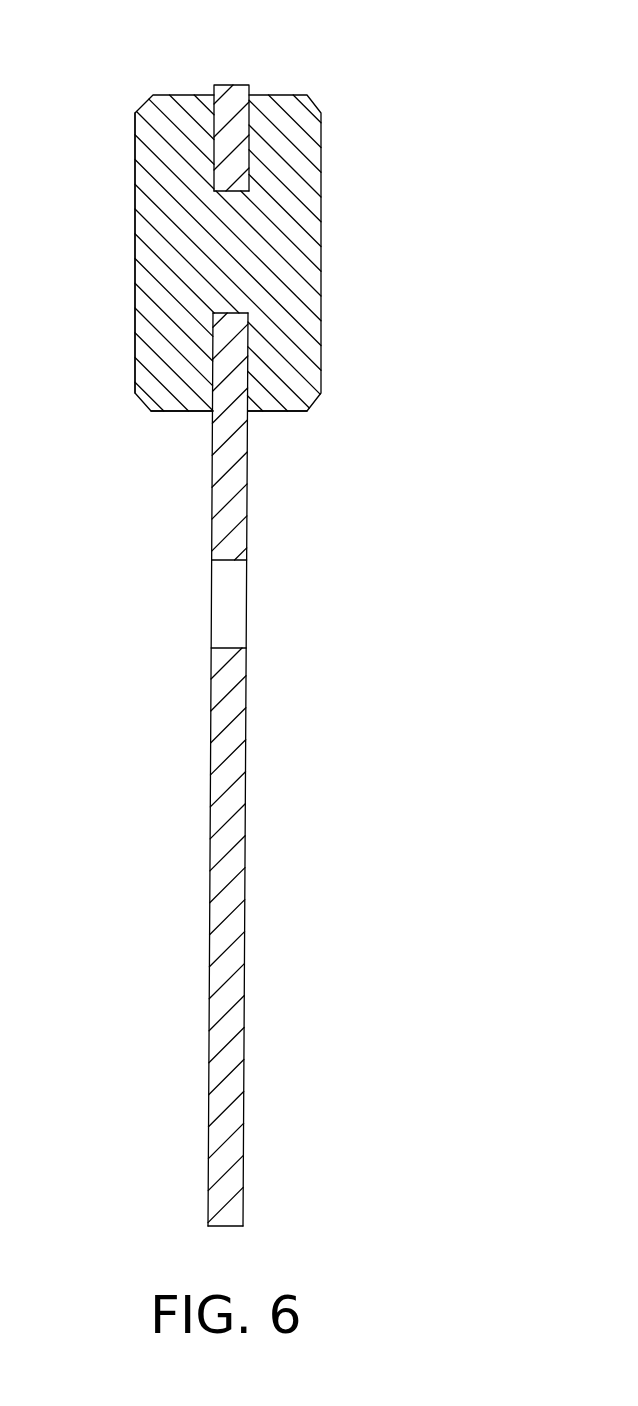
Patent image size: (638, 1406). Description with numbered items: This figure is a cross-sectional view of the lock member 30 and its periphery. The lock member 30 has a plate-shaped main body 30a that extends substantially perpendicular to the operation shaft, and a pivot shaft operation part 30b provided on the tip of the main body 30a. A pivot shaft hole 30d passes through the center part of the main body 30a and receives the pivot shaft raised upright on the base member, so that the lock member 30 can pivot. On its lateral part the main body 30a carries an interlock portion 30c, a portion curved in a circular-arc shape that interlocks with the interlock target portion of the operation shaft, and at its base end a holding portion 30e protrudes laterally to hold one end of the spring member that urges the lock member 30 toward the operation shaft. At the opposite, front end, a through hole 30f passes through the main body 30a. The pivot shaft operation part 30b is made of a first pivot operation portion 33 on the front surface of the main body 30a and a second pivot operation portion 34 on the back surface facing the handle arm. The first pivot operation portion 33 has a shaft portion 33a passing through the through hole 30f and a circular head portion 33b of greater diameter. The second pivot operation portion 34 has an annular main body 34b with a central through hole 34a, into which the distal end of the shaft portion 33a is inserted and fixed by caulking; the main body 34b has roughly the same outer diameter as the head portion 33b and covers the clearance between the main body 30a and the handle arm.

The lock member 30 is at (430, 92).
The main body 30a is at (237, 728).
The pivot shaft operation part 30b is at (352, 189).
The interlock portion 30c is at (225, 845).
The pivot shaft hole 30d is at (221, 648).
The holding portion 30e is at (225, 1158).
The through hole 30f is at (231, 311).
The first pivot operation portion 33 is at (173, 96).
The shaft portion 33a is at (303, 398).
The head portion 33b is at (150, 357).
The second pivot operation portion 34 is at (295, 96).
The through hole 34a is at (284, 193).
The main body 34b is at (320, 342).